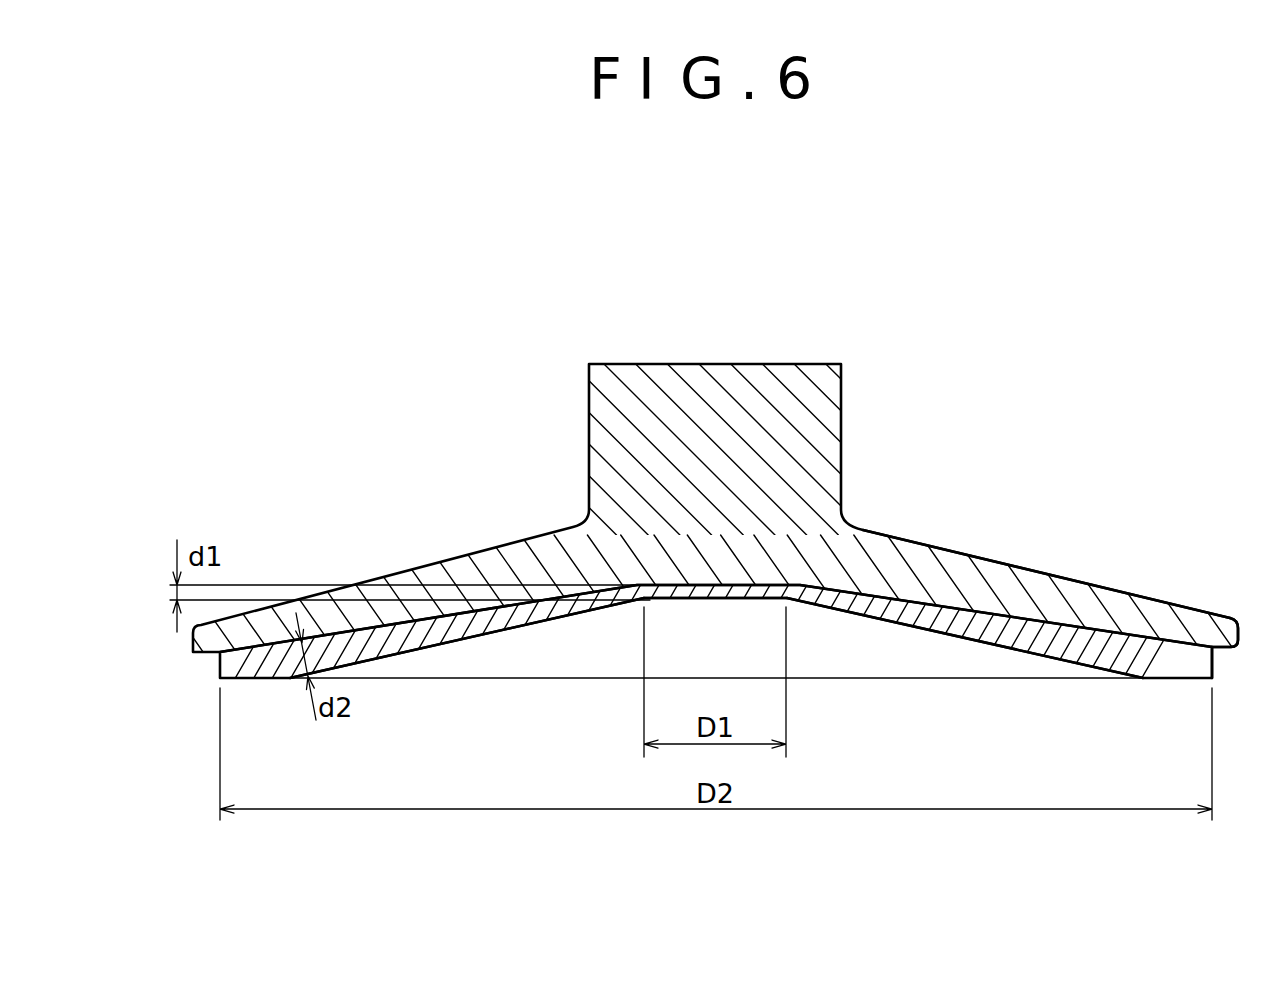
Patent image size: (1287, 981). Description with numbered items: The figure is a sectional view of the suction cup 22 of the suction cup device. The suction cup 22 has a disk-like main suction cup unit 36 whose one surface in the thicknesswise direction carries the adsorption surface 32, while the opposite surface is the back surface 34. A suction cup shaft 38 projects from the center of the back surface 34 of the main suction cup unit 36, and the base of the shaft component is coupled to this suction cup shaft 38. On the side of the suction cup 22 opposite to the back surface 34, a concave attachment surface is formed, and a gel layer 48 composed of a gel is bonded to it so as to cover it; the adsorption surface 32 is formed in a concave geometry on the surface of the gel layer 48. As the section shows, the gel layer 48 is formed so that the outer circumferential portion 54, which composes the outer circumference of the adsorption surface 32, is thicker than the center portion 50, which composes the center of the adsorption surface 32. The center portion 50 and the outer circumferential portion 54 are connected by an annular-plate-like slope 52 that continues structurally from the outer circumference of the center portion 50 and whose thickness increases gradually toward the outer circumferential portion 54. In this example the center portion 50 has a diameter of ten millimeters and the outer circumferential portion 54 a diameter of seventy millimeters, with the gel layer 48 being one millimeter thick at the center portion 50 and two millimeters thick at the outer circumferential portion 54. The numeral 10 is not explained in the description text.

The disk drive device 10 is at (1087, 632).
The suction cup 22 is at (862, 310).
The adsorption surface 32 is at (985, 640).
The back surface 34 is at (1048, 573).
The main suction cup unit 36 is at (928, 543).
The suction cup shaft 38 is at (588, 415).
The gel layer 48 is at (387, 641).
The center portion 50 is at (757, 598).
The slope 52 is at (942, 633).
The outer circumferential portion 54 is at (1180, 673).